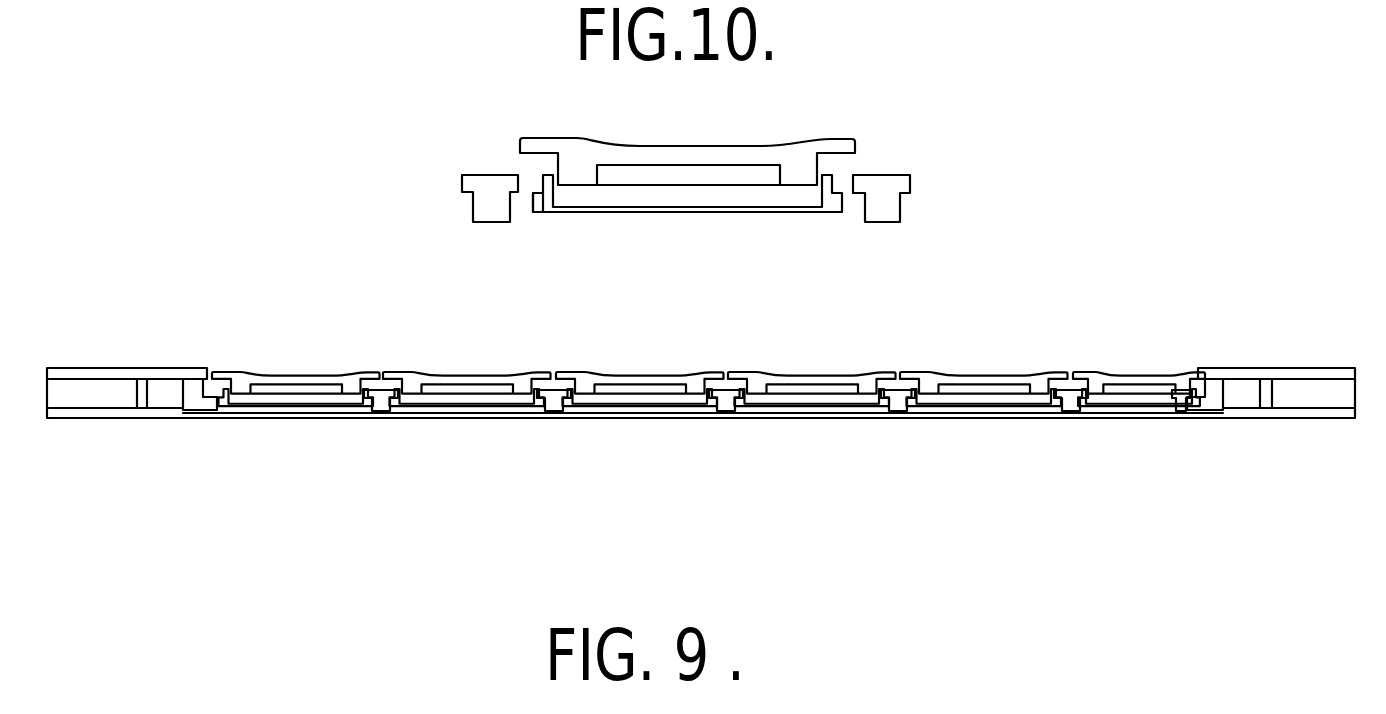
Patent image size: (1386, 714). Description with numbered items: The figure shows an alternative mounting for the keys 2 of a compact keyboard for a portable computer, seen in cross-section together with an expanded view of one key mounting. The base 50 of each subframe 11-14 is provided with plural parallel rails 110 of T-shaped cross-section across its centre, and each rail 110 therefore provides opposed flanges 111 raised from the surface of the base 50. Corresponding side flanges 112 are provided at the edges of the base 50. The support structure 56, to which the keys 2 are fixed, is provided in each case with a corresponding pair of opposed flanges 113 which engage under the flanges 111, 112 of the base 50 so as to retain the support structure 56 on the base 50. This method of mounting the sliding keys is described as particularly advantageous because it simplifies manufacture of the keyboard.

In FIG. 10, the key 2 is at (798, 152).
In FIG. 9, the key 2 is at (412, 374).
In FIG. 10, the support structure 56 is at (963, 247).
In FIG. 9, the support structure 56 is at (1100, 455).
In FIG. 10, the rail 110 is at (483, 197).
In FIG. 9, the rail 110 is at (383, 412).
In FIG. 10, the opposed flange 111 is at (848, 183).
In FIG. 9, the opposed flange 111 is at (890, 399).
In FIG. 9, the side flange 112 is at (1190, 397).
In FIG. 10, the opposed flange 113 is at (540, 208).
In FIG. 9, the opposed flange 113 is at (728, 412).
In FIG. 9, the base 50 is at (168, 420).
In FIG. 9, the subframe 11-14 is at (283, 470).